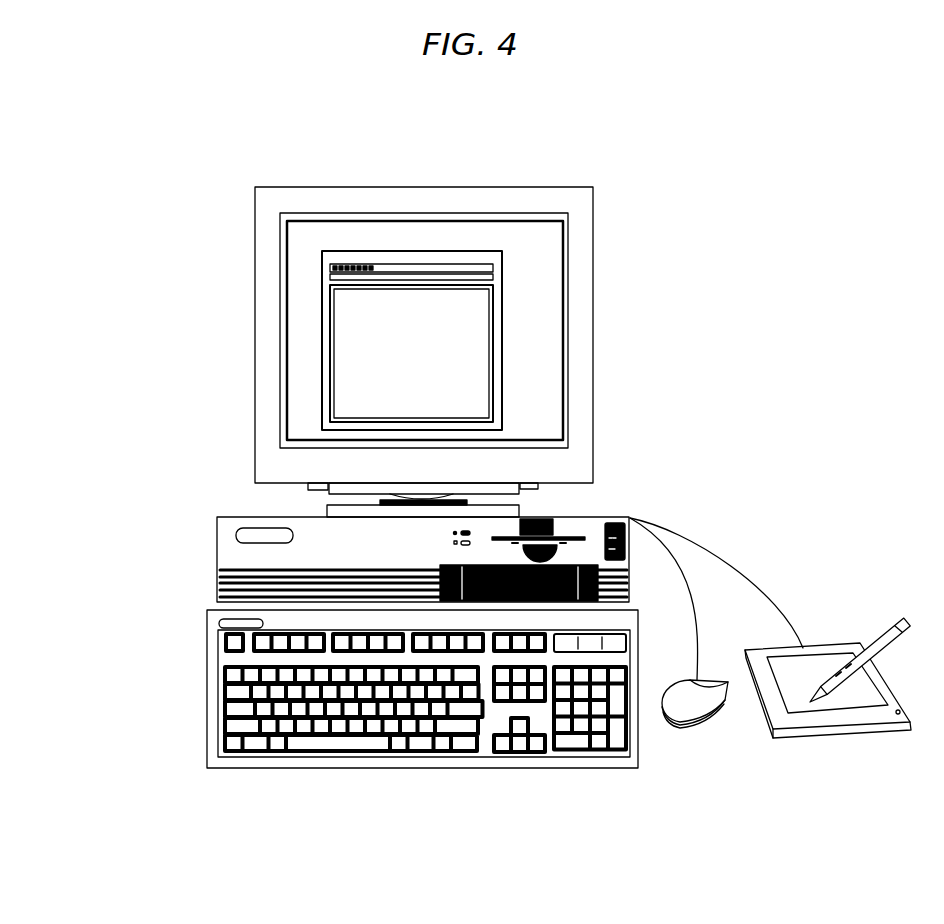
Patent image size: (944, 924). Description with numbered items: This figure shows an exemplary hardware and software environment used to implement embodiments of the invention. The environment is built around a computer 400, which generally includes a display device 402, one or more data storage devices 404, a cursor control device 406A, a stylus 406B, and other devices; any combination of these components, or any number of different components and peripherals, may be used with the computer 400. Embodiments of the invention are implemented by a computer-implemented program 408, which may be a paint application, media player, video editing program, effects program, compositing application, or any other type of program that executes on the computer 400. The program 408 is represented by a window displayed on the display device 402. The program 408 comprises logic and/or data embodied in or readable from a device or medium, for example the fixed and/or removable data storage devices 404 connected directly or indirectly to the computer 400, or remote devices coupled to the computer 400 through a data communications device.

The computer 400 is at (222, 535).
The display device 402 is at (573, 183).
The data storage device 404 is at (570, 533).
The cursor control device 406A is at (697, 742).
The stylus 406B is at (848, 742).
The computer-implemented program 408 is at (502, 334).